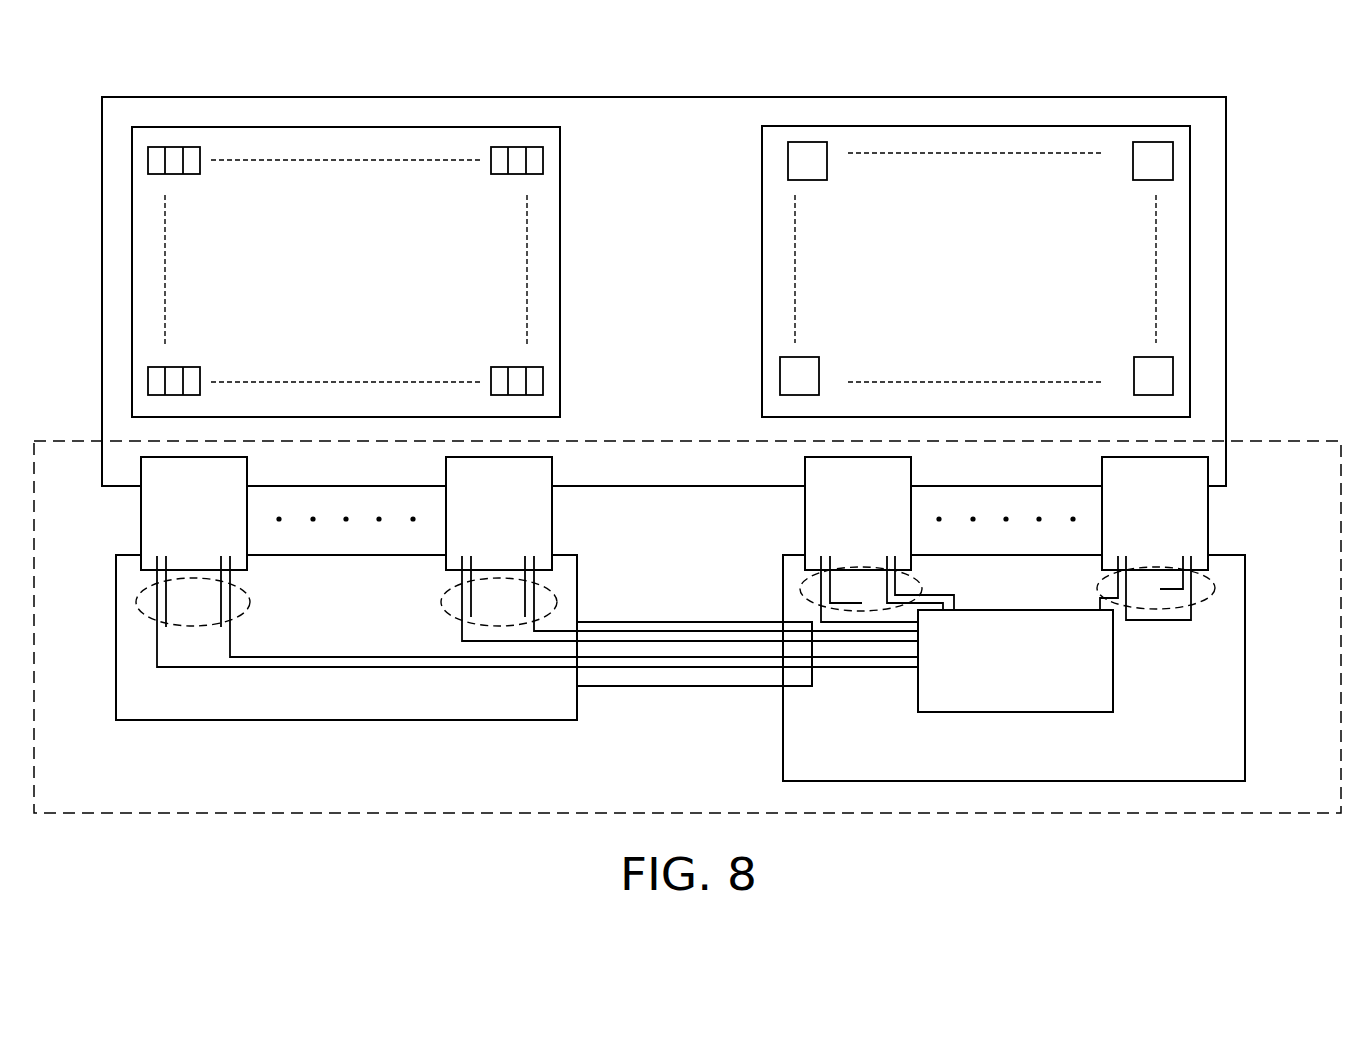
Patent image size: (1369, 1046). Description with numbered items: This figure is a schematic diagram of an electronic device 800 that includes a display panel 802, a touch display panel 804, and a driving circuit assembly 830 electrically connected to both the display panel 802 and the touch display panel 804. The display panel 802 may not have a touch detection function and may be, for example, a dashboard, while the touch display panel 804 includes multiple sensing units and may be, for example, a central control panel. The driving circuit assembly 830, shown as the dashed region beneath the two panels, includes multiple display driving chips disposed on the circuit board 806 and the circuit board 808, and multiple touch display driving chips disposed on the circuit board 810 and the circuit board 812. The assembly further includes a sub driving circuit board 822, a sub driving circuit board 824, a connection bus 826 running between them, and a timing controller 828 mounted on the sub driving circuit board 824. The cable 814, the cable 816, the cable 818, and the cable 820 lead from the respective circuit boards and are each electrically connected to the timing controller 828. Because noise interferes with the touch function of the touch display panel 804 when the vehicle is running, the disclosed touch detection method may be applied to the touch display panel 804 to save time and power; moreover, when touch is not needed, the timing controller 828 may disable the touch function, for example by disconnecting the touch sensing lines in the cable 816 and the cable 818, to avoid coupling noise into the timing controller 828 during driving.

The electronic device 800 is at (127, 58).
The display panel 802 is at (367, 286).
The touch display panel 804 is at (997, 286).
The circuit board 806 is at (141, 512).
The circuit board 808 is at (552, 512).
The circuit board 810 is at (805, 512).
The circuit board 812 is at (1209, 512).
The cable 814 is at (253, 603).
The cable 816 is at (557, 603).
The cable 818 is at (920, 587).
The cable 820 is at (1215, 588).
The sub driving circuit board 822 is at (343, 720).
The sub driving circuit board 824 is at (1245, 738).
The connection bus 826 is at (694, 687).
The timing controller 828 is at (1113, 672).
The driving circuit assembly 830 is at (1308, 437).